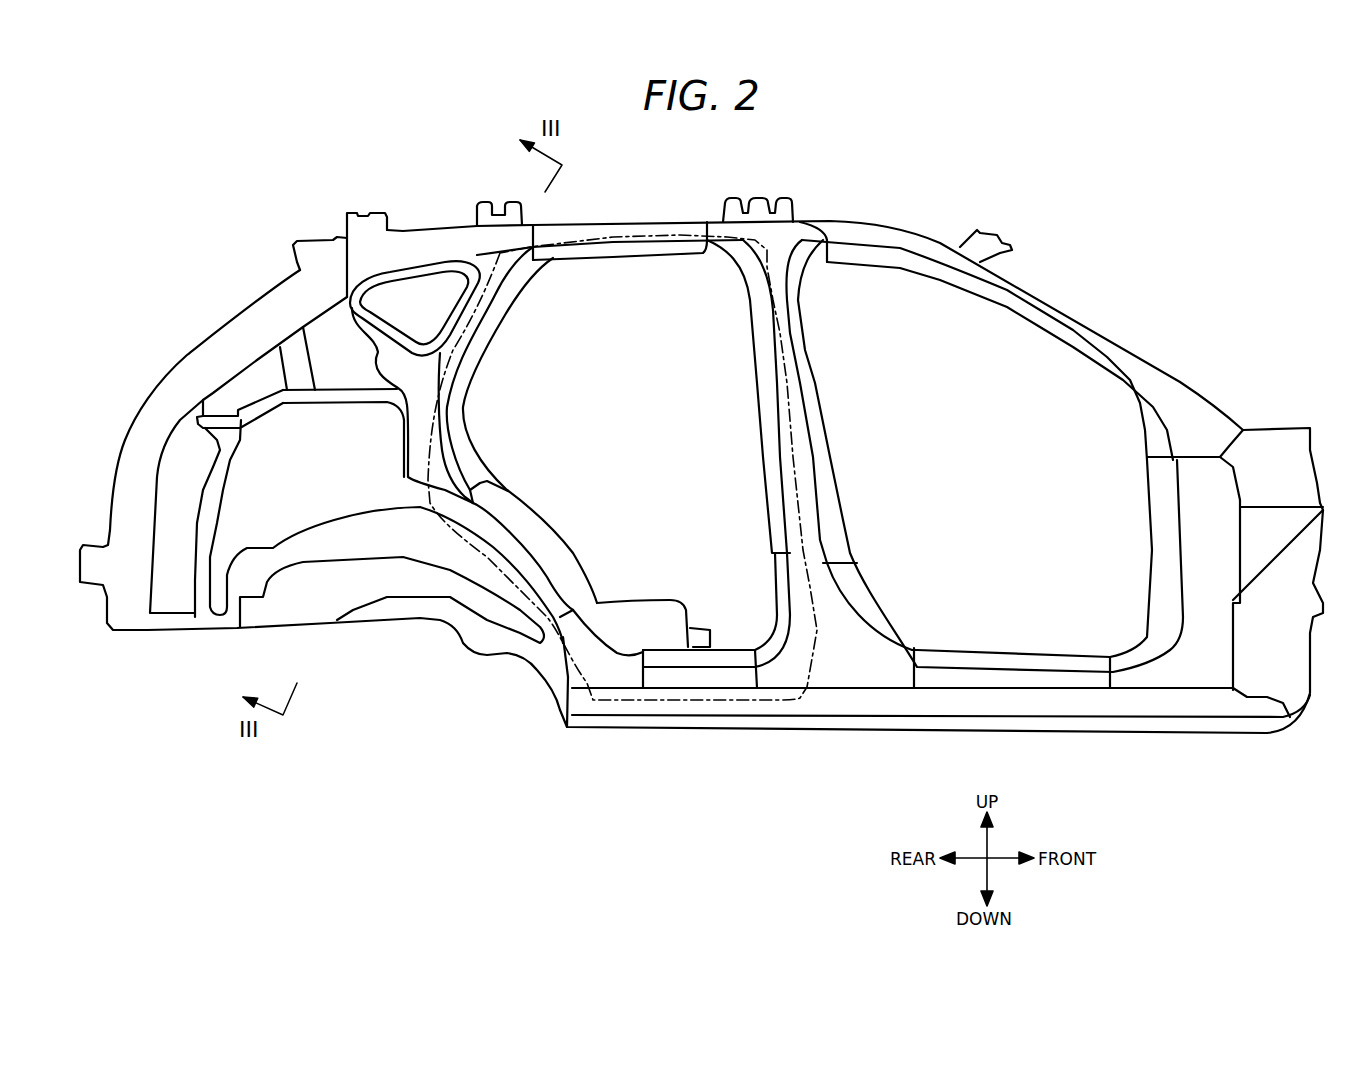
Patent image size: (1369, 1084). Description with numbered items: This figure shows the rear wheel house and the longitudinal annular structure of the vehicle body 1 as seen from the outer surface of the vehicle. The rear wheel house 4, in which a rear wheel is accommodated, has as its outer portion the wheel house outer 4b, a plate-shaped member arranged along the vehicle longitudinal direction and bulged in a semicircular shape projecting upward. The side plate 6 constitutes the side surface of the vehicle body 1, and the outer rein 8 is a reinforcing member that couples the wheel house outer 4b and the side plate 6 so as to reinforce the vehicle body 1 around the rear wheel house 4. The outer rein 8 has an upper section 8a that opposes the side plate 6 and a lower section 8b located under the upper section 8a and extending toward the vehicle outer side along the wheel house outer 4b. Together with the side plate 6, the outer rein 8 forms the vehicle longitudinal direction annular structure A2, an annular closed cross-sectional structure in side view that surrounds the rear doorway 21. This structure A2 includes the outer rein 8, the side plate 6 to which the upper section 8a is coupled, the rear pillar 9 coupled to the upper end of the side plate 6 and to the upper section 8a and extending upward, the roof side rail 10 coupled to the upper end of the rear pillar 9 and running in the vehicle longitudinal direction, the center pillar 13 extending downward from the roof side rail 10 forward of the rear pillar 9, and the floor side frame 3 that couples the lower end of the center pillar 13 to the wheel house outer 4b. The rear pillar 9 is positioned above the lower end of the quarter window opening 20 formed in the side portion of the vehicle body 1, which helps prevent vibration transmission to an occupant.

The vehicle body 1 is at (1103, 260).
The floor side frame 3 is at (723, 693).
The rear wheel house 4 is at (440, 630).
The wheel house outer 4b is at (365, 548).
The side plate 6 is at (347, 362).
The outer rein 8 is at (447, 430).
The upper section 8a is at (440, 383).
The lower section 8b is at (437, 467).
The rear pillar 9 is at (480, 327).
The roof side rail 10 is at (640, 232).
The center pillar 13 is at (833, 457).
The quarter window opening 20 is at (410, 300).
The rear doorway 21 is at (693, 350).
The vehicle longitudinal direction annular structure A2 is at (667, 707).